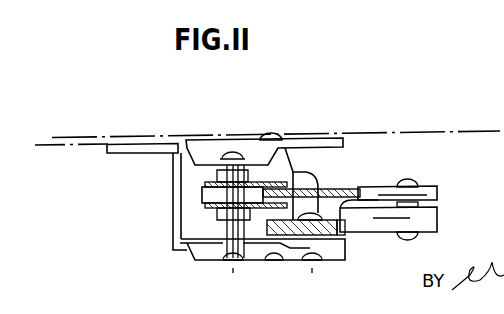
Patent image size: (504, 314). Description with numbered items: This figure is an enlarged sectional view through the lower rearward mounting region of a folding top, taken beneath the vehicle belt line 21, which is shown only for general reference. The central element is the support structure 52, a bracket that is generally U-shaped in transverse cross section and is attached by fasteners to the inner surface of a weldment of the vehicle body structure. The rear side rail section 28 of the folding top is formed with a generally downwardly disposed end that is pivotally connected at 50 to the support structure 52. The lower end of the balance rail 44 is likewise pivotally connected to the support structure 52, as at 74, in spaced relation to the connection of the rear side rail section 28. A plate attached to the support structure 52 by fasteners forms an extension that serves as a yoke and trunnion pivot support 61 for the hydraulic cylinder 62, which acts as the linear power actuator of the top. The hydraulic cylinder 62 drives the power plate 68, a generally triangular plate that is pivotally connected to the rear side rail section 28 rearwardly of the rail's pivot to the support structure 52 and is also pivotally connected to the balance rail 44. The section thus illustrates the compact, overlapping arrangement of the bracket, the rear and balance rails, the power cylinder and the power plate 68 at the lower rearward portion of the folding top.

The vehicle belt line 21 is at (369, 133).
The rear side rail section 28 is at (205, 192).
The balance rail 44 is at (423, 223).
The pivotal connection 50 is at (233, 270).
The support structure 52 is at (172, 172).
The yoke and trunnion pivot support 61 is at (272, 132).
The hydraulic cylinder 62 is at (300, 168).
The power plate 68 is at (425, 197).
The pivotal connection 74 is at (312, 268).